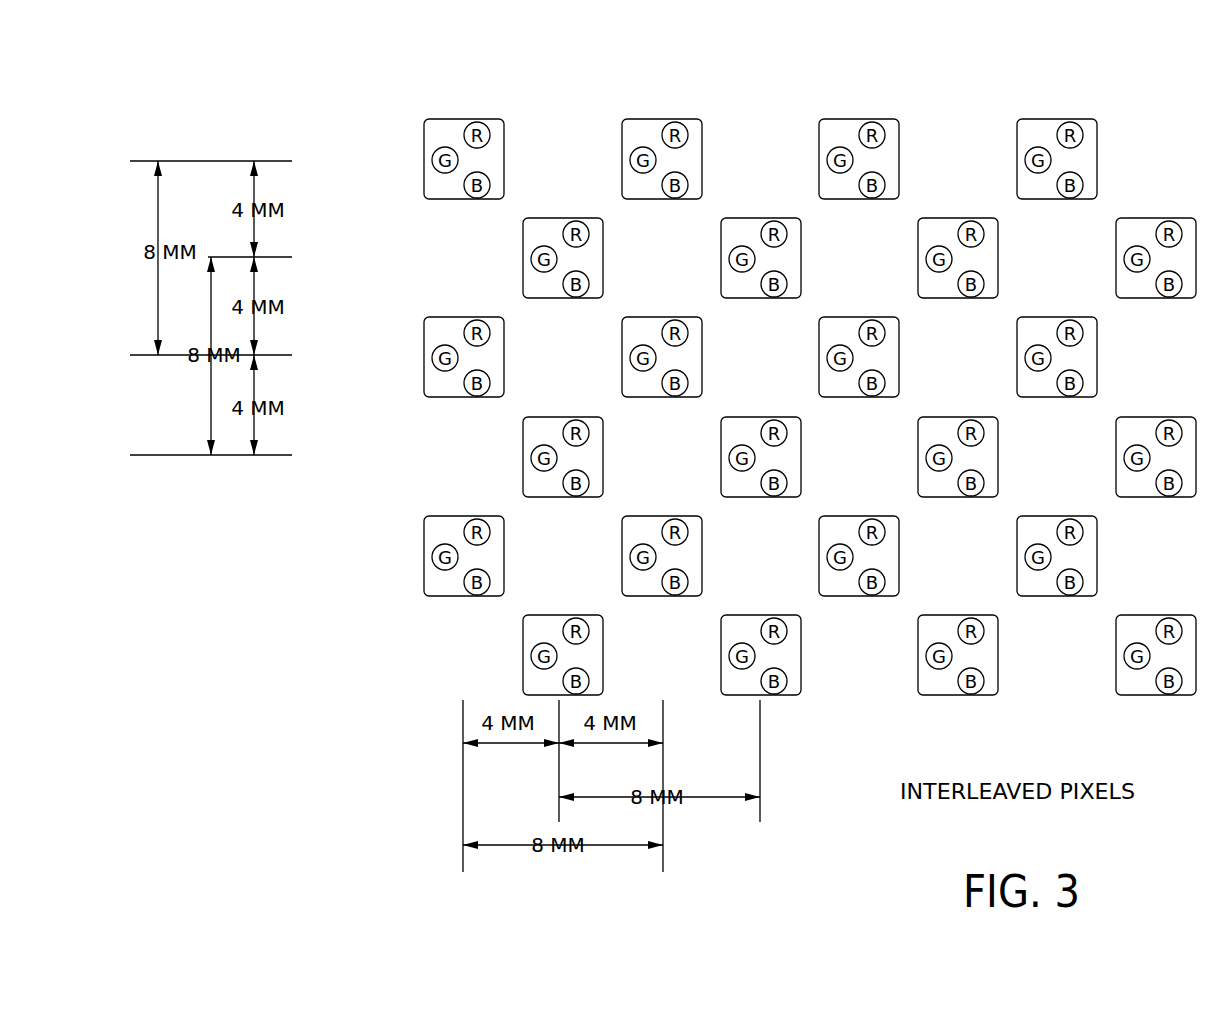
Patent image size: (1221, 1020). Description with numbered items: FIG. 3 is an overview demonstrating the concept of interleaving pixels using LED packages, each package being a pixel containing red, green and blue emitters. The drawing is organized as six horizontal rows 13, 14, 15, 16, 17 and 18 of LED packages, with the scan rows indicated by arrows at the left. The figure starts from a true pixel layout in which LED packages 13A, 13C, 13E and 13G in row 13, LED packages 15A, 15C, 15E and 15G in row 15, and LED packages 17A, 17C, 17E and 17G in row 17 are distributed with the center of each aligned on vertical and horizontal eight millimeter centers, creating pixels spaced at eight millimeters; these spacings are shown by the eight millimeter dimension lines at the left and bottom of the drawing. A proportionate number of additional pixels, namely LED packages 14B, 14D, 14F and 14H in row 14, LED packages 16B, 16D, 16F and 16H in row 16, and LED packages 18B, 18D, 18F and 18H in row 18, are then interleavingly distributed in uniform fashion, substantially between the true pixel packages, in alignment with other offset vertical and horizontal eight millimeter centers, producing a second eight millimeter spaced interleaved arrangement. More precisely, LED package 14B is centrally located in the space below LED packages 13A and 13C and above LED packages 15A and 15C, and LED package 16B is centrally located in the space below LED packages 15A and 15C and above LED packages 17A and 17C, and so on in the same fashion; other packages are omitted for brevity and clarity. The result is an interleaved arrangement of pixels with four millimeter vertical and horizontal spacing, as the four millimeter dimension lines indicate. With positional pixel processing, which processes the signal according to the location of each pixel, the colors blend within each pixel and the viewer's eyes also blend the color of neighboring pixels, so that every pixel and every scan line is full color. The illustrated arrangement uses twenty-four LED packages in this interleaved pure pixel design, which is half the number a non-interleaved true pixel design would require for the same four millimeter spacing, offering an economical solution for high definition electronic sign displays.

The pixel row 13 is at (395, 159).
The pixel row 14 is at (484, 258).
The pixel row 15 is at (395, 357).
The pixel row 16 is at (484, 457).
The pixel row 17 is at (395, 556).
The pixel row 18 is at (484, 655).
The LED package 13A is at (458, 119).
The LED package 13C is at (656, 119).
The LED package 13E is at (853, 119).
The LED package 13G is at (1051, 119).
The LED package 14B is at (537, 218).
The LED package 14D is at (735, 218).
The LED package 14F is at (932, 218).
The LED package 14H is at (1130, 218).
The LED package 15A is at (438, 317).
The LED package 15C is at (636, 317).
The LED package 15E is at (833, 317).
The LED package 15G is at (1031, 317).
The LED package 16B is at (537, 417).
The LED package 16D is at (735, 417).
The LED package 16F is at (932, 417).
The LED package 16H is at (1130, 417).
The LED package 17A is at (438, 516).
The LED package 17C is at (636, 516).
The LED package 17E is at (833, 516).
The LED package 17G is at (1031, 516).
The LED package 18B is at (537, 615).
The LED package 18D is at (735, 615).
The LED package 18F is at (932, 615).
The LED package 18H is at (1130, 615).